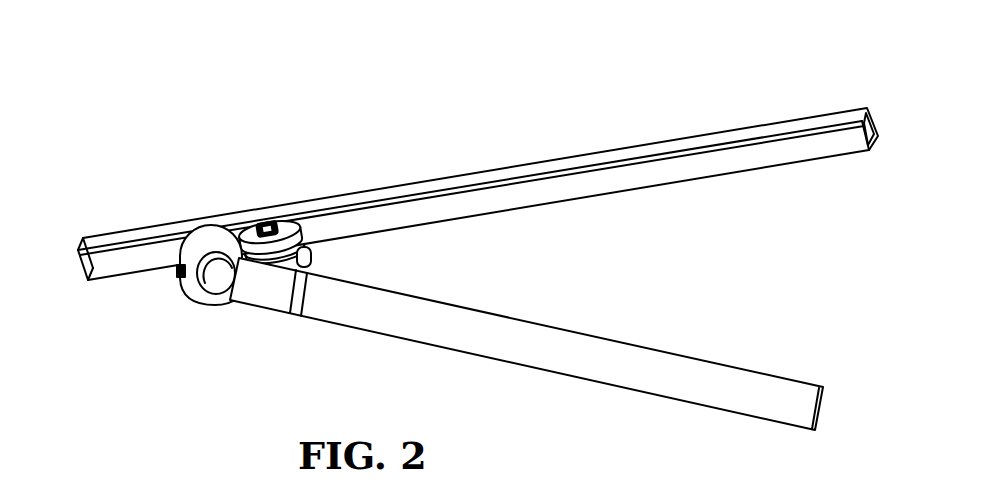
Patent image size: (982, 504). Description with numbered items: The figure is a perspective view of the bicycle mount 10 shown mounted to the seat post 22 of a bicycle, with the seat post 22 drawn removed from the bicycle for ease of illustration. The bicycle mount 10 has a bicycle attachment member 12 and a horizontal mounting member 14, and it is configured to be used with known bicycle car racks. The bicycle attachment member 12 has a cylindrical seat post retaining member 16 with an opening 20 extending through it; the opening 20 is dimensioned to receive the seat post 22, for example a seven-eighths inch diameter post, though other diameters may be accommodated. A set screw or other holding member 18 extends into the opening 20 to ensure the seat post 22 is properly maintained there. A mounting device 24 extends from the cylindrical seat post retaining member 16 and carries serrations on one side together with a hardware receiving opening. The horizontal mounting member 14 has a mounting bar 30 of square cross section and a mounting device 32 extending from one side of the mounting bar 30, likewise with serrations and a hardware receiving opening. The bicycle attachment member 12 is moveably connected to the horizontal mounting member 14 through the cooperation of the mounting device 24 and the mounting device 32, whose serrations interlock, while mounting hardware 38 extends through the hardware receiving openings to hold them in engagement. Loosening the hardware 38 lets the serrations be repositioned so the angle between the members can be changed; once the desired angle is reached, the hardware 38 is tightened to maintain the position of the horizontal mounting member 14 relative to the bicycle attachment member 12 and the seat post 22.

The bicycle mount 10 is at (478, 232).
The bicycle attachment member 12 is at (240, 261).
The horizontal mounting member 14 is at (478, 182).
The cylindrical seat post retaining member 16 is at (212, 306).
The set screw or other holding member 18 is at (176, 272).
The opening 20 is at (218, 279).
The seat post 22 is at (578, 332).
The mounting device 24 is at (311, 261).
The mounting bar 30 is at (677, 150).
The mounting device 32 is at (298, 225).
The mounting hardware 38 is at (270, 221).